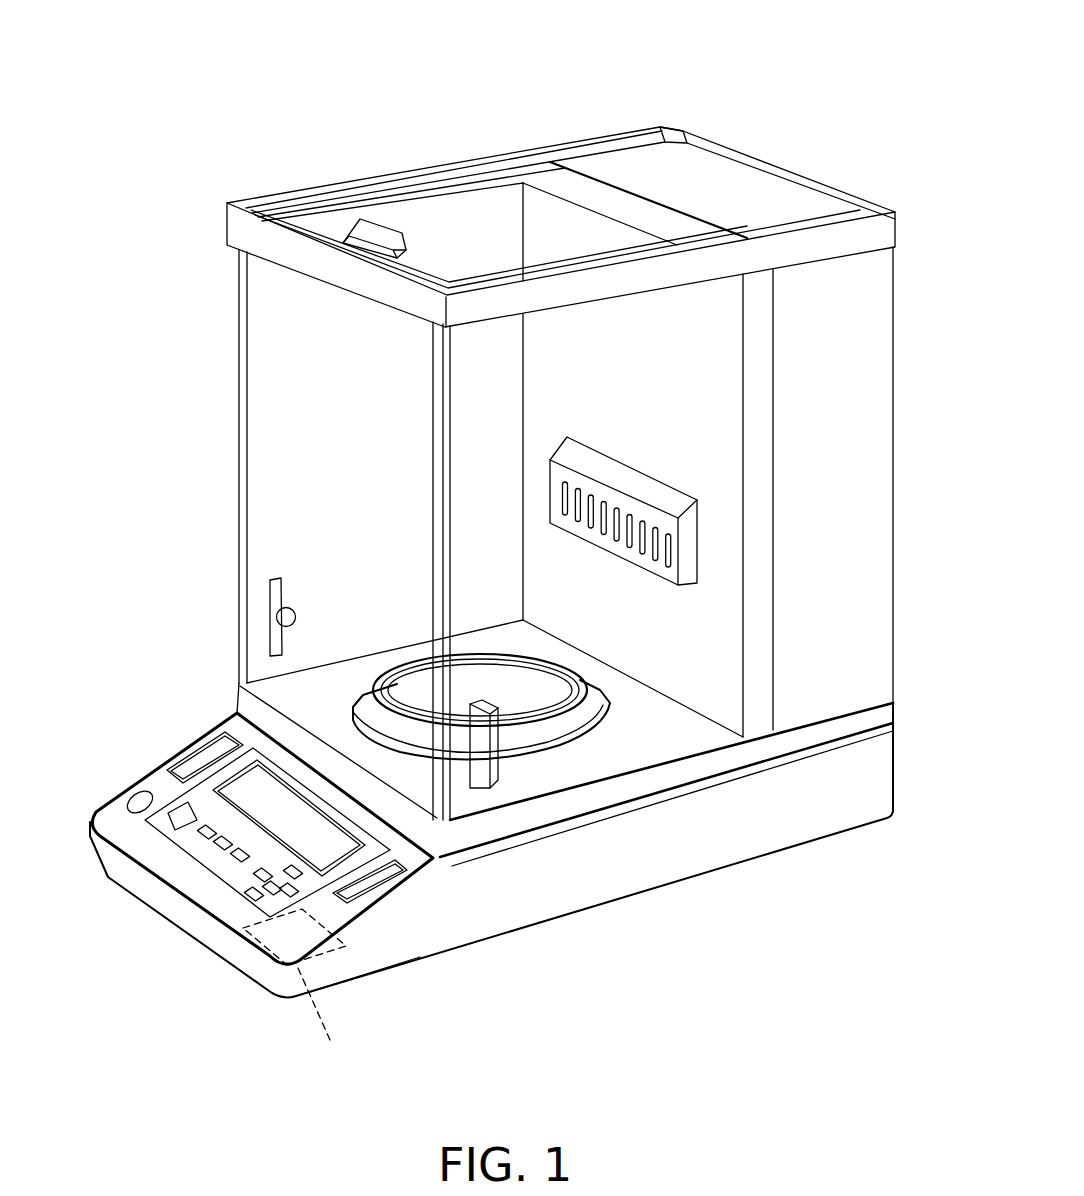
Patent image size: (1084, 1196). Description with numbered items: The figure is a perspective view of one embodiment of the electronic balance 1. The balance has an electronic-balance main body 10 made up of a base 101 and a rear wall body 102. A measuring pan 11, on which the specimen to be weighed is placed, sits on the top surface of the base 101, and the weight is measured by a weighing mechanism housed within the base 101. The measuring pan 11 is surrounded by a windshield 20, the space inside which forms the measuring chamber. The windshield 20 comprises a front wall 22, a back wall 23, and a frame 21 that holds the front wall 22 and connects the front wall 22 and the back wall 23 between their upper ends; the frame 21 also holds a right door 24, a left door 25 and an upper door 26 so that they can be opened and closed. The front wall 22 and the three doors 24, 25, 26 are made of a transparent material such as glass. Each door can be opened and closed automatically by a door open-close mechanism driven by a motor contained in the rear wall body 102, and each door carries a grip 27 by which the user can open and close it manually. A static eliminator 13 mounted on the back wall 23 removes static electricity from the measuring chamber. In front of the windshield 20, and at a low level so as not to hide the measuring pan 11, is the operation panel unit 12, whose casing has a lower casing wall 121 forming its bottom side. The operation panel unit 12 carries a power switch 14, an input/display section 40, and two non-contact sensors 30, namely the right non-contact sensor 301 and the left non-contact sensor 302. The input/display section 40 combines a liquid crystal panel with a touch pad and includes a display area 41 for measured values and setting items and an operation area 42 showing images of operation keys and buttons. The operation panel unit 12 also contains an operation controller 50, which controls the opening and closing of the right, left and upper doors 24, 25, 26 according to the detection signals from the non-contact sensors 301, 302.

The electronic balance 1 is at (742, 88).
The electronic-balance main body 10 is at (625, 913).
The base 101 is at (877, 785).
The rear wall body 102 is at (767, 180).
The measuring pan 11 is at (603, 700).
The operation panel unit 12 is at (253, 933).
The lower casing wall 121 is at (350, 983).
The static eliminator 13 is at (685, 535).
The power switch 14 is at (127, 795).
The windshield 20 is at (228, 168).
The frame 21 is at (227, 228).
The front wall 22 is at (260, 480).
The back wall 23 is at (757, 585).
The right door 24 is at (693, 732).
The left door 25 is at (277, 390).
The upper door 26 is at (512, 200).
The grip 27 is at (357, 222).
The non-contact sensor 30 is at (307, 884).
The right non-contact sensor 301 is at (360, 888).
The left non-contact sensor 302 is at (184, 765).
The input/display section 40 is at (157, 837).
The display area 41 is at (253, 770).
The operation area 42 is at (210, 862).
The operation controller 50 is at (331, 1041).